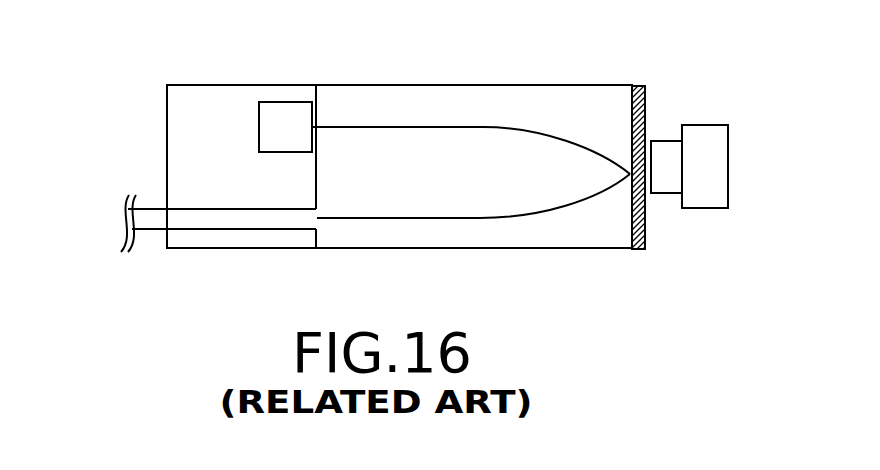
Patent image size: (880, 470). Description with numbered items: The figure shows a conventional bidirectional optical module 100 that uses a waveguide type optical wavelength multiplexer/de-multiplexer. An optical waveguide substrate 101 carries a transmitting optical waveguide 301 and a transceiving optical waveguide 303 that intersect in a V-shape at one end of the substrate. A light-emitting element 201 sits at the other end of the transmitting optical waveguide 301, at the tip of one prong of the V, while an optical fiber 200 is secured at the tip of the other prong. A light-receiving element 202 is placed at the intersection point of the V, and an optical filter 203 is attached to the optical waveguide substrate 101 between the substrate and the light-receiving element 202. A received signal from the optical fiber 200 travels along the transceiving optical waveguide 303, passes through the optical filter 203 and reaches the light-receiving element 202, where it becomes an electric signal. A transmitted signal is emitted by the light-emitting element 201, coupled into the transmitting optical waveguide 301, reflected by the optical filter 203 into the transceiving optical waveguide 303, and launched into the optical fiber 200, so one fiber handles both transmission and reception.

The optical module 100 is at (227, 145).
The optical waveguide substrate 101 is at (527, 85).
The optical fiber 200 is at (248, 231).
The light-emitting element 201 is at (292, 153).
The light-receiving element 202 is at (660, 139).
The optical filter 203 is at (645, 219).
The transmitting optical waveguide 301 is at (368, 126).
The transceiving optical waveguide 303 is at (382, 220).